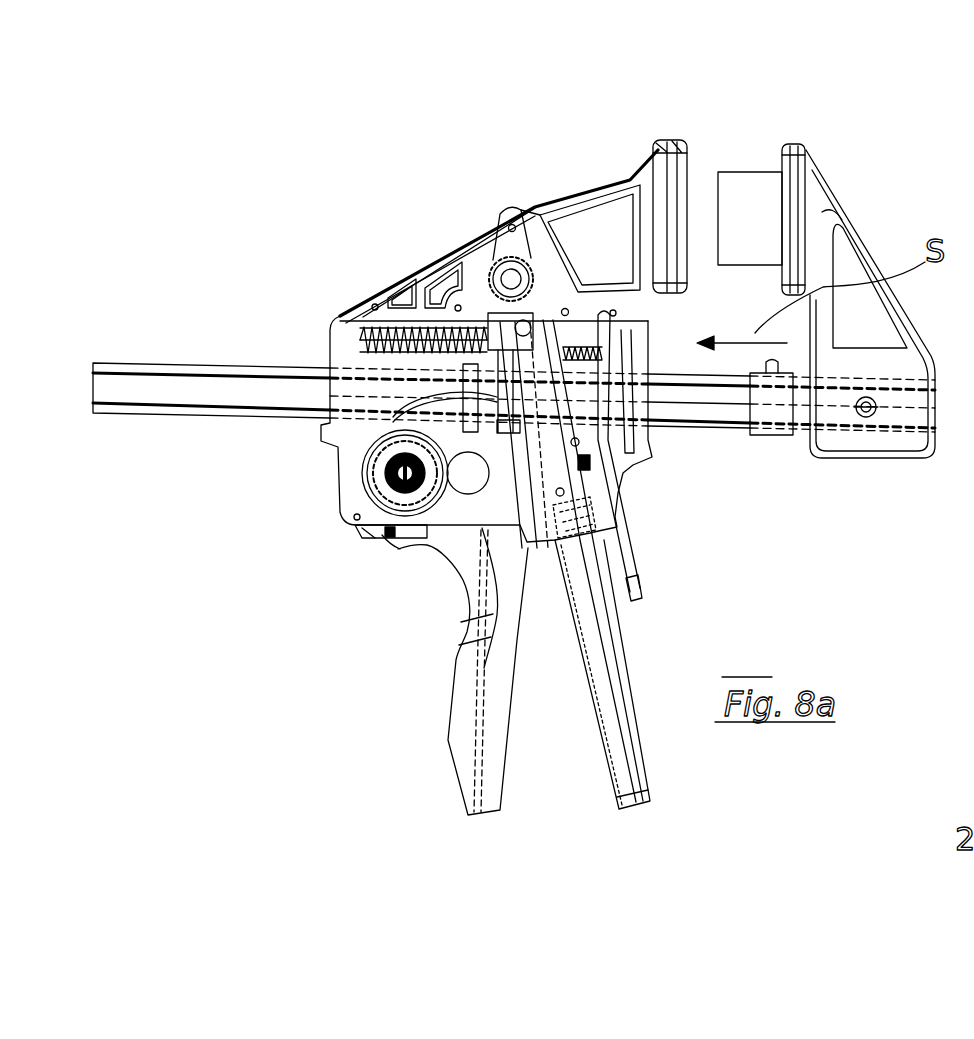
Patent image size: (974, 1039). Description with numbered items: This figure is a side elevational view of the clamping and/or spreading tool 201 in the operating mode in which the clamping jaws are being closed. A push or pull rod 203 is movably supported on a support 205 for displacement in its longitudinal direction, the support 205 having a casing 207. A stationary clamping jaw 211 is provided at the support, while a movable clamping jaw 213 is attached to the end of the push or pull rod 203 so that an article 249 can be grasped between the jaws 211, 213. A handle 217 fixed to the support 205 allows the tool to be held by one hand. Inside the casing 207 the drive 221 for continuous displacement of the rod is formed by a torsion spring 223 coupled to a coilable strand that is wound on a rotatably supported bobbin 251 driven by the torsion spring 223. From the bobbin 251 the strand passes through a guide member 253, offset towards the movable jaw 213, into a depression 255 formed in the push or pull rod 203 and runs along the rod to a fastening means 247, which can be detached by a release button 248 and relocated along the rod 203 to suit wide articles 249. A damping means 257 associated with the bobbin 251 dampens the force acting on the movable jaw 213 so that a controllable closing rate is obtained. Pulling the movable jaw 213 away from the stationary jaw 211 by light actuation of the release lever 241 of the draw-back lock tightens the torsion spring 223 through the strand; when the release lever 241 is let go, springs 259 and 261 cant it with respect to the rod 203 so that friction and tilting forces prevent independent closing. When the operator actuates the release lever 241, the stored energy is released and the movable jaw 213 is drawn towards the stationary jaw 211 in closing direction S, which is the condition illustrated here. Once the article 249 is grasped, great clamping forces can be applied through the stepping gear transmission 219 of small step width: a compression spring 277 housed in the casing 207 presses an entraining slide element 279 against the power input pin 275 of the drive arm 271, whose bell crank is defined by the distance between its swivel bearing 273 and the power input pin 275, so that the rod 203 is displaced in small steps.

The clamping and/or spreading tool 201 is at (367, 244).
The push or pull rod 203 is at (725, 428).
The support 205 is at (462, 232).
The casing 207 is at (320, 432).
The stationary clamping jaw 211 is at (658, 150).
The movable clamping jaw 213 is at (818, 200).
The handle 217 is at (462, 740).
The stepping gear transmission 219 is at (496, 258).
The drive 221 is at (397, 547).
The torsion spring 223 is at (376, 528).
The release lever 241 is at (634, 553).
The fastening means 247 is at (793, 440).
The release button 248 is at (782, 362).
The article 249 is at (745, 192).
The bobbin 251 is at (372, 482).
The guide member 253 is at (357, 308).
The depression 255 is at (174, 388).
The damping means 257 is at (462, 527).
The spring 259 is at (642, 602).
The spring 261 is at (563, 204).
The drive arm 271 is at (647, 768).
The swivel bearing 273 is at (529, 212).
The power input pin 275 is at (649, 320).
The compression spring 277 is at (402, 335).
The entraining slide element 279 is at (510, 550).